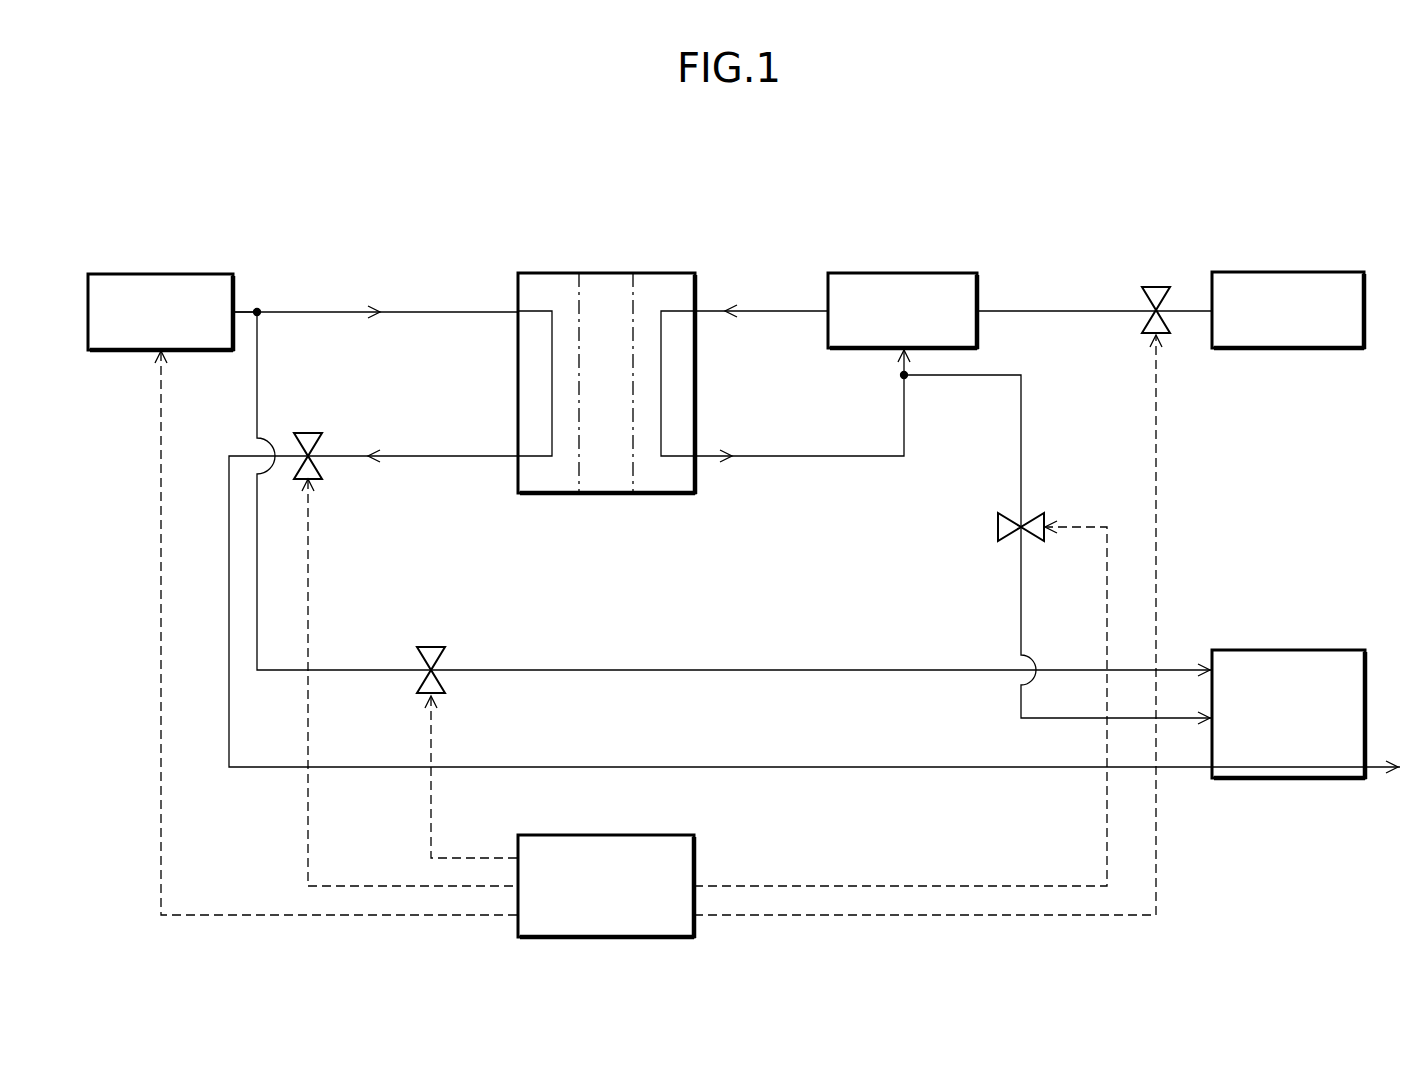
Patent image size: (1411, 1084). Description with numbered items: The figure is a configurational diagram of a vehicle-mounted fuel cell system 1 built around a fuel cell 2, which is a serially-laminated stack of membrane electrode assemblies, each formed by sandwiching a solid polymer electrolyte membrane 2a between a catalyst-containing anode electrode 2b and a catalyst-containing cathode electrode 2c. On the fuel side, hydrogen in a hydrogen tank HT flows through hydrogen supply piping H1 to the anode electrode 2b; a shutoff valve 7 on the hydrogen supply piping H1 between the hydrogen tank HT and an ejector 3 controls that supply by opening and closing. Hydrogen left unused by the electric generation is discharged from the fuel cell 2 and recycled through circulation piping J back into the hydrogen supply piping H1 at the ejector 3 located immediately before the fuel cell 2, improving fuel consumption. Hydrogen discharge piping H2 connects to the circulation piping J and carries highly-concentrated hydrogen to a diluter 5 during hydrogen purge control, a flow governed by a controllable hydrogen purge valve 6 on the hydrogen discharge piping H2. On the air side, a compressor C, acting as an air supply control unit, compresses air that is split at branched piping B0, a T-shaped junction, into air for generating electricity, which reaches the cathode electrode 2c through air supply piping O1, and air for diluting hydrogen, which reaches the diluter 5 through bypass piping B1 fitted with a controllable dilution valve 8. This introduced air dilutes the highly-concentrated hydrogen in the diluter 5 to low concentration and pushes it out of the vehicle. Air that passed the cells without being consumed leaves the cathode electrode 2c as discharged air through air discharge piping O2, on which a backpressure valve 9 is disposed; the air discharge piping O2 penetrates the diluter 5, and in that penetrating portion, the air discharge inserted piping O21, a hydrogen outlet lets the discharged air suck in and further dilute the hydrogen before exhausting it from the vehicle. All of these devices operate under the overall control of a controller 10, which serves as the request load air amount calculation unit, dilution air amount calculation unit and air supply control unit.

The fuel cell system 1 is at (830, 200).
The fuel cell 2 is at (605, 271).
The solid polymer electrolyte membrane 2a is at (608, 479).
The anode electrode 2b is at (672, 297).
The cathode electrode 2c is at (538, 293).
The ejector 3 is at (962, 273).
The diluter 5 is at (1290, 650).
The hydrogen purge valve 6 is at (997, 527).
The shutoff valve 7 is at (1156, 287).
The dilution valve 8 is at (432, 647).
The backpressure valve 9 is at (308, 433).
The controller 10 is at (659, 835).
The compressor C is at (160, 274).
The hydrogen tank HT is at (1290, 272).
The branched piping B0 is at (257, 310).
The bypass piping B1 is at (258, 343).
The air supply piping O1 is at (398, 311).
The air discharge piping O2 is at (352, 458).
The air discharge inserted piping O21 is at (1291, 770).
The hydrogen supply piping H1 is at (770, 310).
The hydrogen discharge piping H2 is at (1021, 408).
The circulation piping J is at (903, 408).